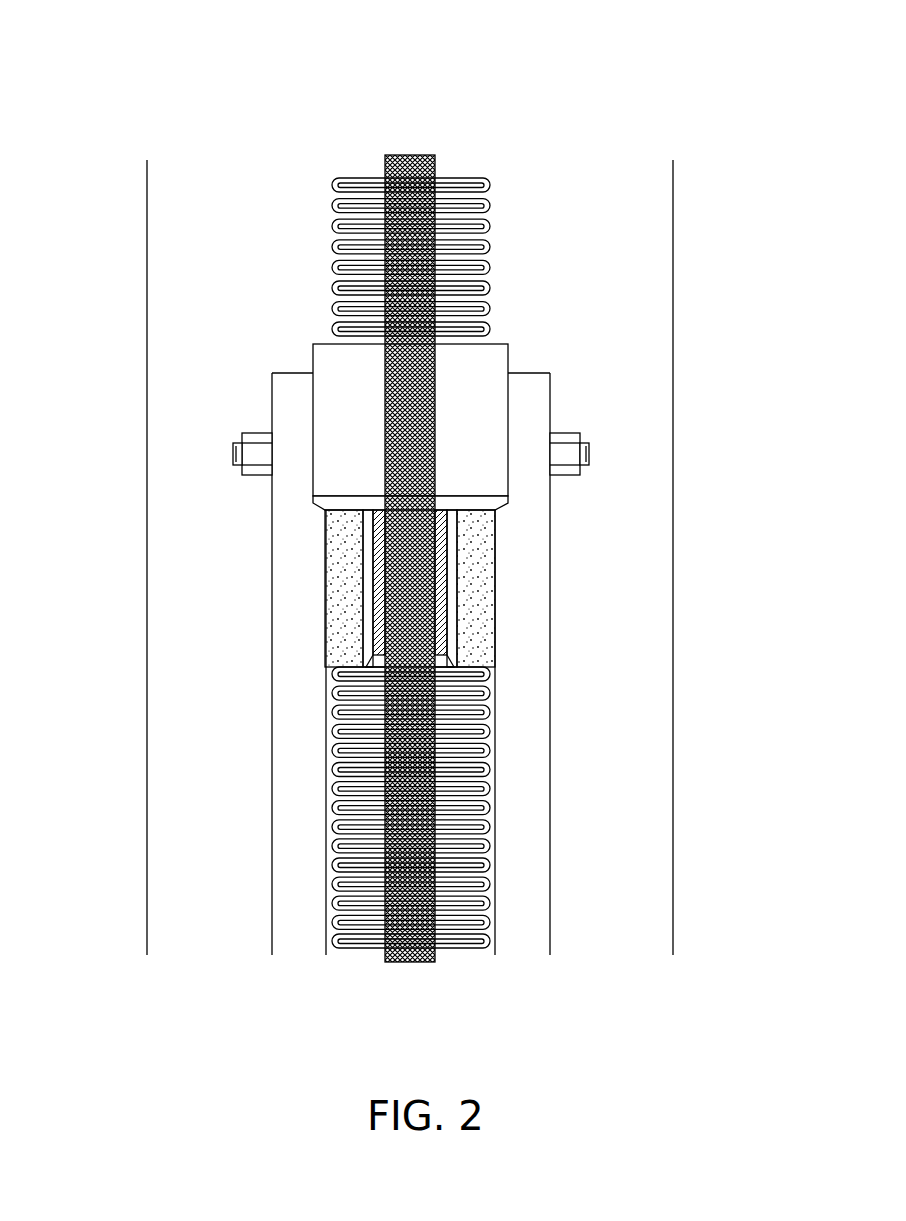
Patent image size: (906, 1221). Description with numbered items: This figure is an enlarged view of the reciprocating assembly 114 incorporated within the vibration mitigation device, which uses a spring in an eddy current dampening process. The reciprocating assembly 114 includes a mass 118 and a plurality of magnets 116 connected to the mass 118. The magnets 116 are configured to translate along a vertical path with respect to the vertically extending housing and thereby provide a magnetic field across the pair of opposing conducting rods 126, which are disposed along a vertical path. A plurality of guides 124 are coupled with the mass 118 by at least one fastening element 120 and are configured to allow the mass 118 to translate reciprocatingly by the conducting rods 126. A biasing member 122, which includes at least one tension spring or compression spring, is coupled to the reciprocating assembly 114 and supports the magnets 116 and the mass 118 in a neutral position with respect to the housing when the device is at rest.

The reciprocating assembly 114 is at (430, 66).
The magnets 116 is at (342, 580).
The mass 118 is at (300, 765).
The fastening element 120 is at (255, 448).
The biasing member 122 is at (495, 272).
The guides 124 is at (343, 460).
The conducting rods 126 is at (440, 880).